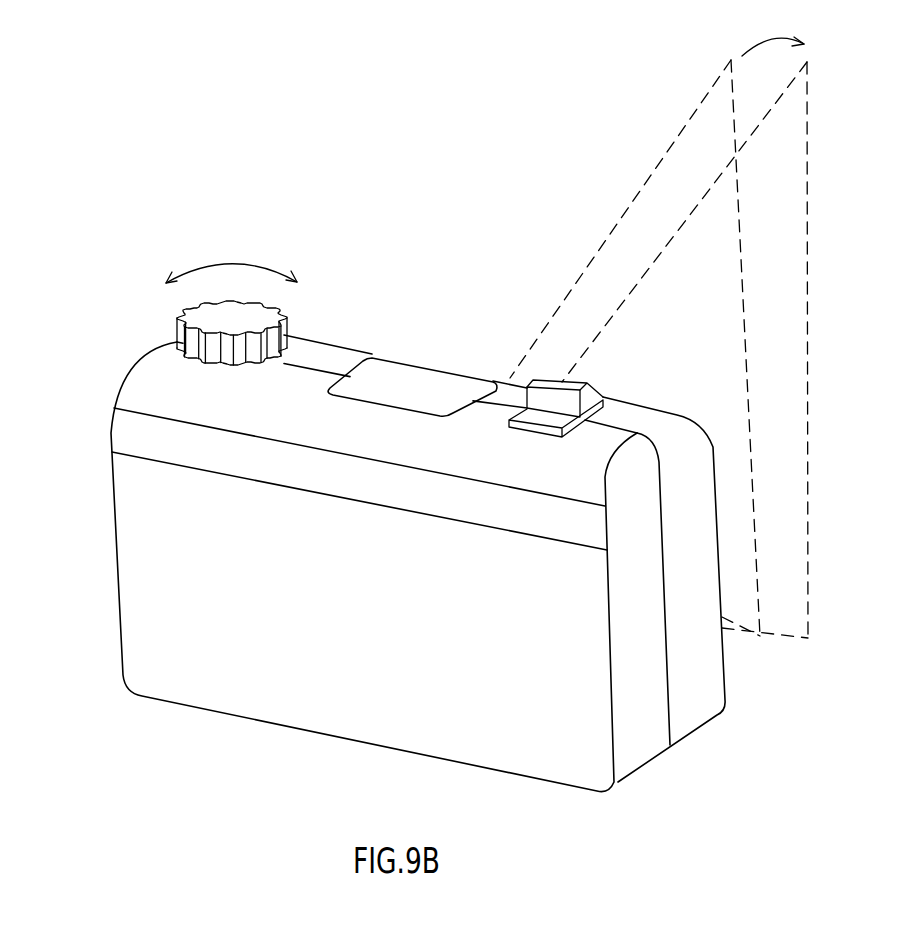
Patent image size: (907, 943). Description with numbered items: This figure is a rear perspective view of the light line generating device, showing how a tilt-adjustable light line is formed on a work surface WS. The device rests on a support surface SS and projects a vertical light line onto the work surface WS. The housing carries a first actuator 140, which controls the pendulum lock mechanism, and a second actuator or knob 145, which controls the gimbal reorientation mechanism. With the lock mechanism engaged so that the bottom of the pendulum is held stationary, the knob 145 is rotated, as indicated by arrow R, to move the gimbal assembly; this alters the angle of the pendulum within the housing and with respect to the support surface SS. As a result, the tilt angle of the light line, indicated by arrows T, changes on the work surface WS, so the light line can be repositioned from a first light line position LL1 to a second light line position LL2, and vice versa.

The second actuator or knob 145 is at (203, 325).
The first actuator or switch 140 is at (550, 418).
The first light line position LL1 is at (735, 113).
The second light line position LL2 is at (808, 170).
The work surface WS is at (866, 352).
The support surface SS is at (232, 792).
The tilt angle arrows T is at (773, 31).
The knob rotation arrow R is at (231, 255).